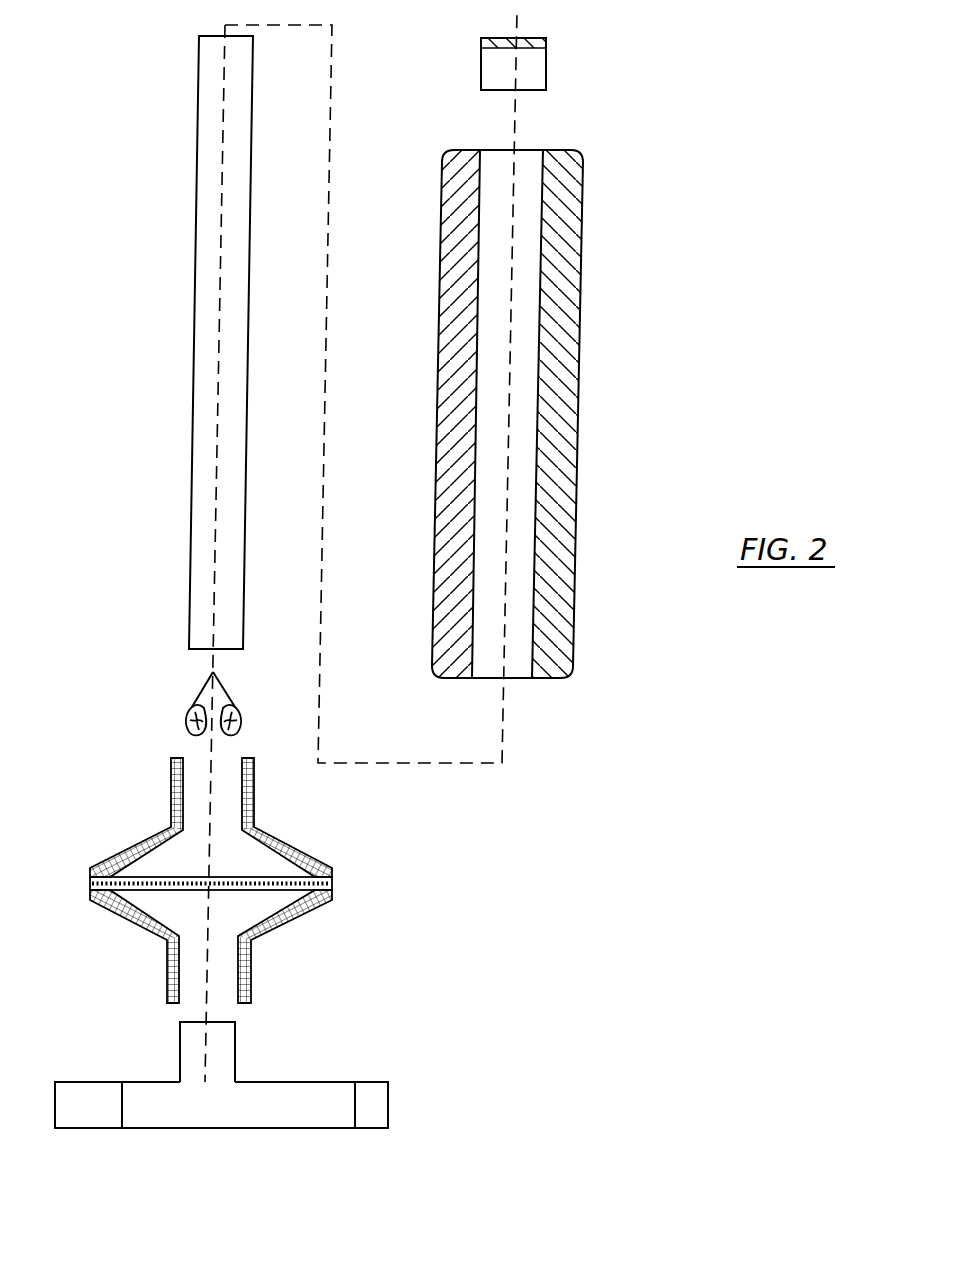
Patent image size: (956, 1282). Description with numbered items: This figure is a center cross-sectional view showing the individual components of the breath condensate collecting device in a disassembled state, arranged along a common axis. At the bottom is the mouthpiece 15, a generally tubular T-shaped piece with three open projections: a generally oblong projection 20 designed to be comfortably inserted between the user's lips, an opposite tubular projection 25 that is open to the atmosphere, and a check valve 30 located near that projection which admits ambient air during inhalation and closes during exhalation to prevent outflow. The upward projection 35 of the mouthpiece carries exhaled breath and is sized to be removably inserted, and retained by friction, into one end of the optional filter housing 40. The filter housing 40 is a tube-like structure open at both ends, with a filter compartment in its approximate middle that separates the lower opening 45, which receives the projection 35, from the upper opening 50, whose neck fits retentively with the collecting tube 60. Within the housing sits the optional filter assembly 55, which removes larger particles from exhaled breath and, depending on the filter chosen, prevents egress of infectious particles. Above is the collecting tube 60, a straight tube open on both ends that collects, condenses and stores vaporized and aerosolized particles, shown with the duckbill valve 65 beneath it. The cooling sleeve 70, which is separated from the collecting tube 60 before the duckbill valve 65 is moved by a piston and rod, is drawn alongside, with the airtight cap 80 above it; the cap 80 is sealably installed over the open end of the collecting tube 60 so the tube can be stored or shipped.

The mouthpiece 15 is at (236, 1109).
The oblong projection 20 is at (367, 1081).
The projection 25 is at (60, 1130).
The check valve 30 is at (122, 1128).
The projection 35 is at (235, 1040).
The filter housing 40 is at (228, 813).
The opening 45 is at (223, 997).
The opening 50 is at (193, 762).
The filter assembly 55 is at (333, 880).
The collecting tube 60 is at (197, 200).
The duckbill valve 65 is at (200, 690).
The cooling sleeve 70 is at (578, 372).
The airtight cap 80 is at (546, 58).